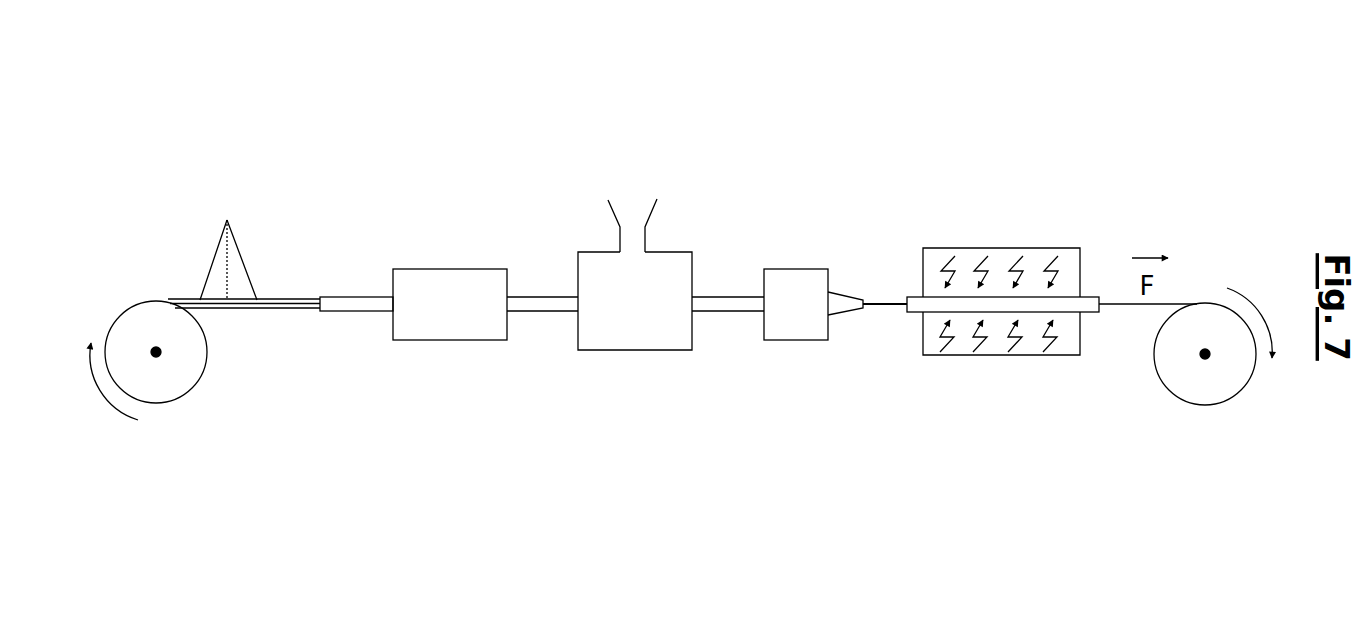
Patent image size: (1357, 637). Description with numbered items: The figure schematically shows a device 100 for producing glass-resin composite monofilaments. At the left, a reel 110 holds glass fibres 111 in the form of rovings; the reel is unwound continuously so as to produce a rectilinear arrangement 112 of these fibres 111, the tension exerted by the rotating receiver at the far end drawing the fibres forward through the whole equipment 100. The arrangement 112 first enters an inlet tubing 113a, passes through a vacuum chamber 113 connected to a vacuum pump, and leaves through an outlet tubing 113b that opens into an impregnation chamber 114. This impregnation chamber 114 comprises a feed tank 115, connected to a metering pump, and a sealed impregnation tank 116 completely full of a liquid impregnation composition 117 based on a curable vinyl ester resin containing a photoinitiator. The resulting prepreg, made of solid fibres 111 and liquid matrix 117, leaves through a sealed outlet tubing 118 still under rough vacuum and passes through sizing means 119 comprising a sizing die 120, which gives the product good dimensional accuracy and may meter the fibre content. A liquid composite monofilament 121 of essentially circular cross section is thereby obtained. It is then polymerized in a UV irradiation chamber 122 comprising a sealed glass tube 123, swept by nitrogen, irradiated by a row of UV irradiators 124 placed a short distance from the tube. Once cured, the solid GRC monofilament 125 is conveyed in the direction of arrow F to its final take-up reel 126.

The device 100 is at (708, 96).
The reel 110 is at (163, 373).
The glass fibres 111 is at (226, 240).
The rectilinear arrangement 112 is at (277, 292).
The inlet tubing 113a is at (353, 295).
The vacuum chamber 113 is at (438, 262).
The outlet tubing 113b is at (542, 297).
The impregnation chamber 114 is at (590, 247).
The feed tank 115 is at (629, 209).
The sealed impregnation tank 116 is at (598, 352).
The impregnation composition 117 is at (645, 320).
The sealed outlet tubing 118 is at (722, 297).
The sizing means 119 is at (797, 262).
The sizing die 120 is at (843, 295).
The liquid composite monofilament 121 is at (885, 302).
The UV irradiation chamber 122 is at (1042, 242).
The sealed glass tube 123 is at (912, 315).
The UV irradiators 124 is at (980, 259).
The GRC monofilament 125 is at (1132, 307).
The take-up reel 126 is at (1220, 378).